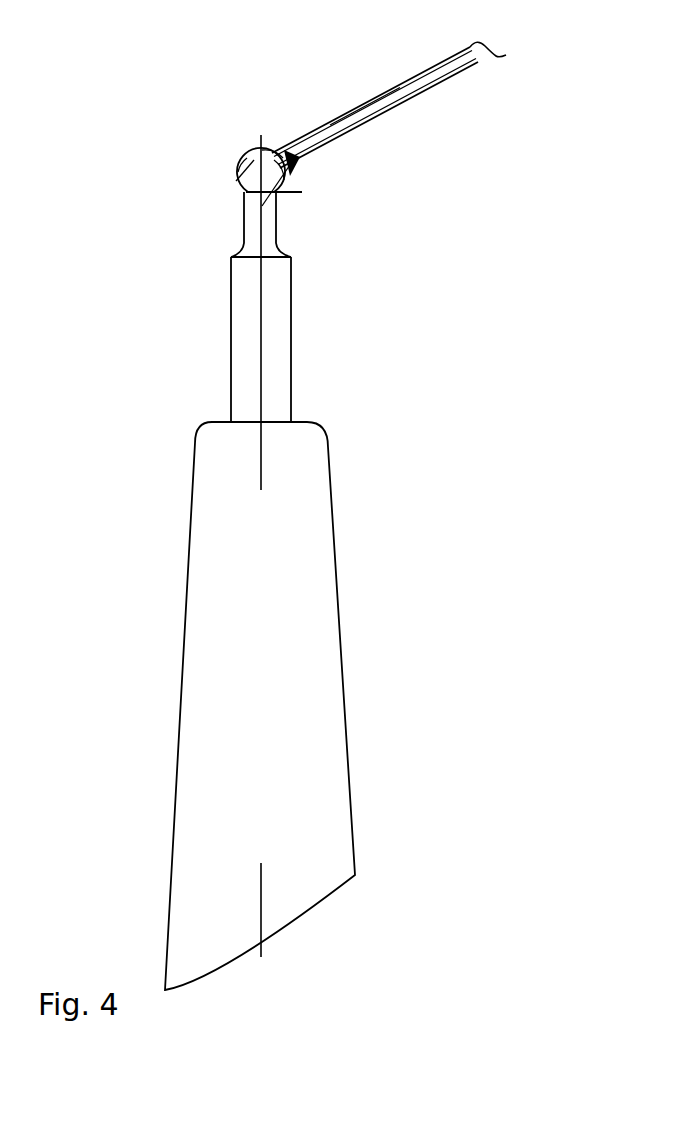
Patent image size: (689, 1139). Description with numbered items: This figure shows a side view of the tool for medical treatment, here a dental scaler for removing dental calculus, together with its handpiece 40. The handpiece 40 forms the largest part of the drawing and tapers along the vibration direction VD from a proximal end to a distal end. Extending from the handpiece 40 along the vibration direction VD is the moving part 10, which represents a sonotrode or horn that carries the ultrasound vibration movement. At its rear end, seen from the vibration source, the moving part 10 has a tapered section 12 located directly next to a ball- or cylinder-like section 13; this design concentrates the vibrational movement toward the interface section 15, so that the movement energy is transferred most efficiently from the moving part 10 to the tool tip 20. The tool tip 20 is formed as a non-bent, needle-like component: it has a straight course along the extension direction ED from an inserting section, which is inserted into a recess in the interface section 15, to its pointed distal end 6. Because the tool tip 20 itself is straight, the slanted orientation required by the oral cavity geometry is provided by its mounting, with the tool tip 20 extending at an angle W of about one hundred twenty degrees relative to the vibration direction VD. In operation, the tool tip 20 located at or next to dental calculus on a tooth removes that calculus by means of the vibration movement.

The distal end 6 is at (532, 62).
The moving part 10 is at (285, 360).
The tapered section 12 is at (316, 216).
The ball- or cylinder-like section 13 is at (241, 159).
The interface section 15 is at (281, 130).
The tool tip 20 is at (358, 120).
The handpiece 40 is at (310, 643).
The extension direction ED is at (240, 170).
The vibration direction VD is at (262, 313).
The angle W is at (347, 165).